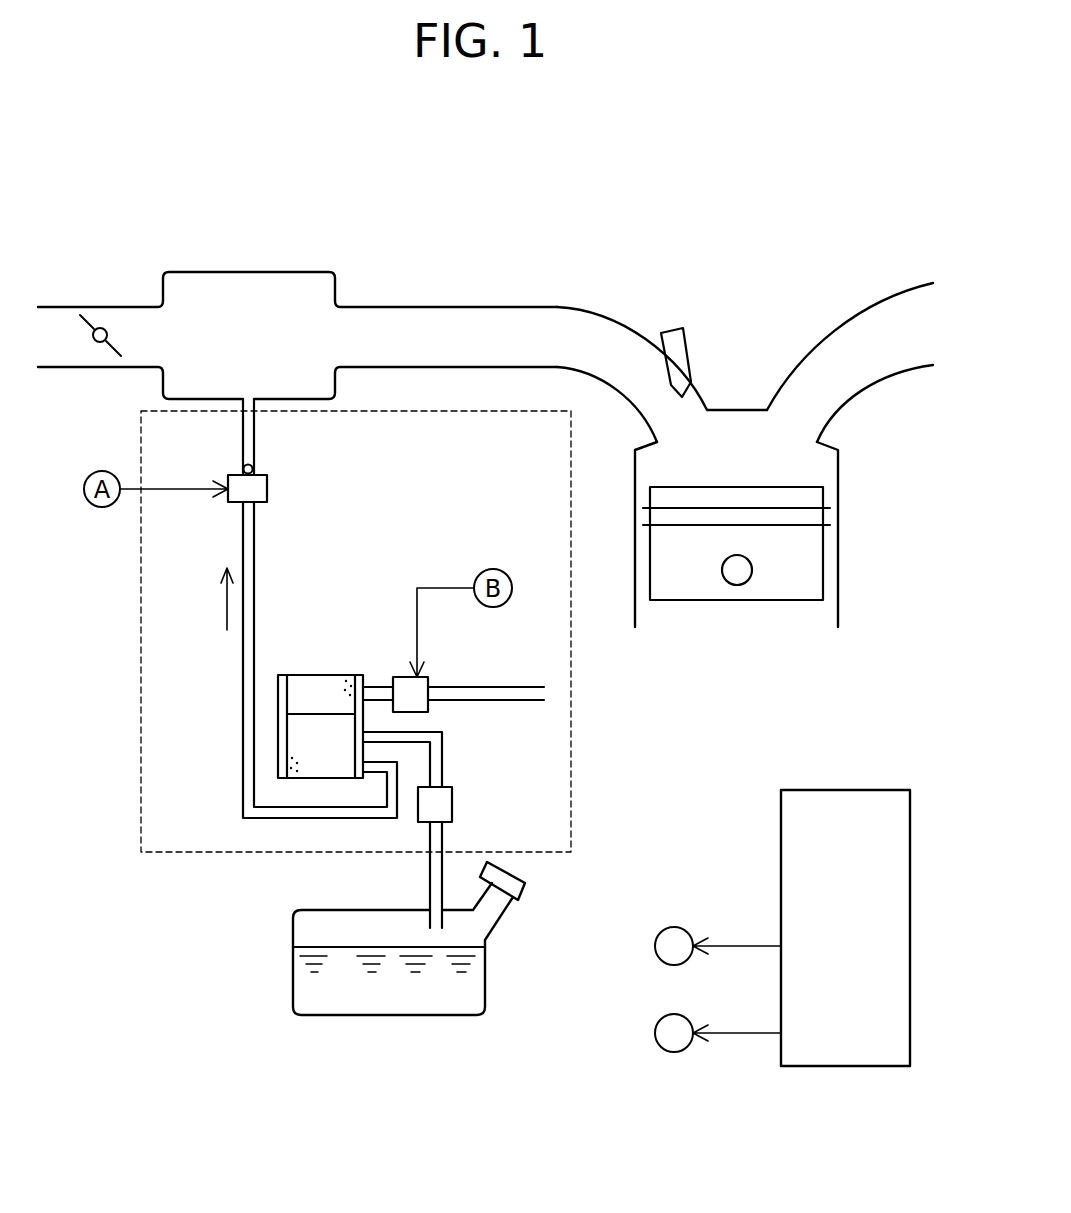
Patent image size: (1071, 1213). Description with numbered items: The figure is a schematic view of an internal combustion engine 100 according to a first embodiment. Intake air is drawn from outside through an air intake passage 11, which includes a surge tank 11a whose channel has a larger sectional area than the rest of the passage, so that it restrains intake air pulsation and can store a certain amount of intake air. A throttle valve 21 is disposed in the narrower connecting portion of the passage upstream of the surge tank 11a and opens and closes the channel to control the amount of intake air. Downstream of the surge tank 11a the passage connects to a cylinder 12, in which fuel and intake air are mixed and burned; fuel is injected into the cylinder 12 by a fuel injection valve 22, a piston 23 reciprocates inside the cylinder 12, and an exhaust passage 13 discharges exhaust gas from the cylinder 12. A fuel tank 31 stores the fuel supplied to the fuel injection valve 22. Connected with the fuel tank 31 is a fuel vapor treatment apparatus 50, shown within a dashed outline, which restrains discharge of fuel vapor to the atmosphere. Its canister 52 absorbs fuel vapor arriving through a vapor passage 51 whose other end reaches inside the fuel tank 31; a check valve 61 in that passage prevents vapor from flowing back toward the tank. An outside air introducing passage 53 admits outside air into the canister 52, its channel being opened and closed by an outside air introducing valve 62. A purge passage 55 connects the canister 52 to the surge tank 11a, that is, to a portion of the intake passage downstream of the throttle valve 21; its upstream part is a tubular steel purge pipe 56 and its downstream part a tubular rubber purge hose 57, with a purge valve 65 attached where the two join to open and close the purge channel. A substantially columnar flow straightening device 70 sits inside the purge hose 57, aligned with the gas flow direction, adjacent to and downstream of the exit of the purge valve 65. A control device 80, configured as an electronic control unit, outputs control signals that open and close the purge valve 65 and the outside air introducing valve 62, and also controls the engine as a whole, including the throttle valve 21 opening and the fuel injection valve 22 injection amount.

The internal combustion engine 100 is at (792, 195).
The air intake passage 11 is at (402, 308).
The surge tank 11a is at (253, 272).
The cylinder 12 is at (838, 465).
The exhaust passage 13 is at (832, 318).
The throttle valve 21 is at (100, 367).
The fuel injection valve 22 is at (688, 338).
The piston 23 is at (823, 580).
The fuel tank 31 is at (293, 930).
The fuel vapor treatment apparatus 50 is at (141, 800).
The vapor passage 51 is at (443, 760).
The canister 52 is at (322, 675).
The outside air introducing passage 53 is at (488, 687).
The purge passage 55 is at (320, 608).
The purge pipe 56 is at (320, 658).
The purge hose 57 is at (255, 440).
The check valve 61 is at (452, 822).
The outside air introducing valve 62 is at (432, 705).
The purge valve 65 is at (233, 503).
The flow straightening device 70 is at (245, 466).
The control device 80 is at (845, 790).